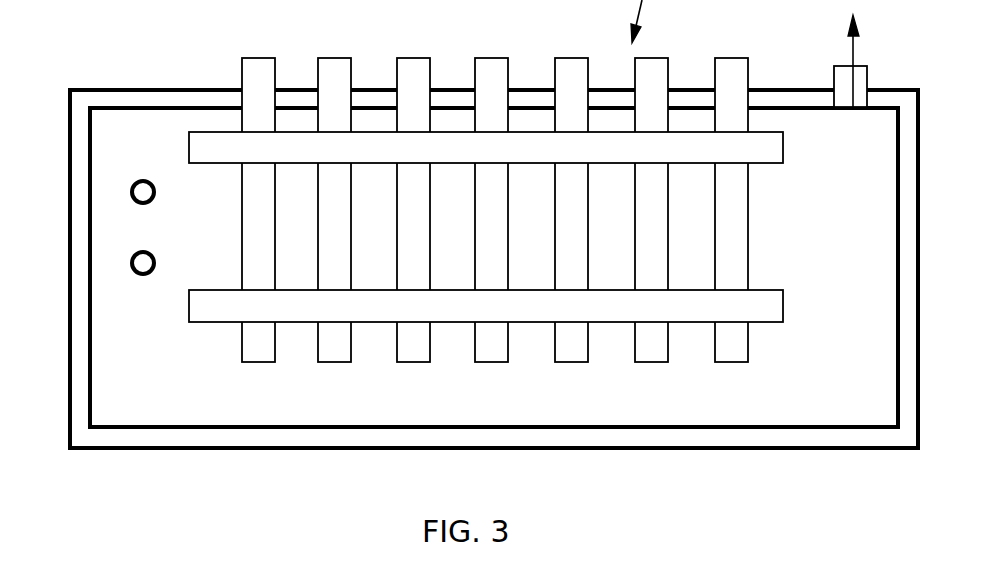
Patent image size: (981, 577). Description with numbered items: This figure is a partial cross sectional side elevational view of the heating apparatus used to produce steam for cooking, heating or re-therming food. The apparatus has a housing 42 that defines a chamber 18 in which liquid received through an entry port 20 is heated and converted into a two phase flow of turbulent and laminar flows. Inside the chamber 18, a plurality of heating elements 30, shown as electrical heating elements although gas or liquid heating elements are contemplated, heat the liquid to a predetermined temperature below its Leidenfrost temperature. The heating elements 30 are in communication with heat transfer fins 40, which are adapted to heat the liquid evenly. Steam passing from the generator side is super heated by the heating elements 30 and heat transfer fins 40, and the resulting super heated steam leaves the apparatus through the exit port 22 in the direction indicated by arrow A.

The chamber 18 is at (645, 407).
The entry port 20 is at (128, 190).
The exit port 22 is at (869, 87).
The heating element 30 is at (573, 58).
The heat transfer fin 40 is at (783, 148).
The housing 42 is at (202, 90).
The arrow A is at (853, 63).